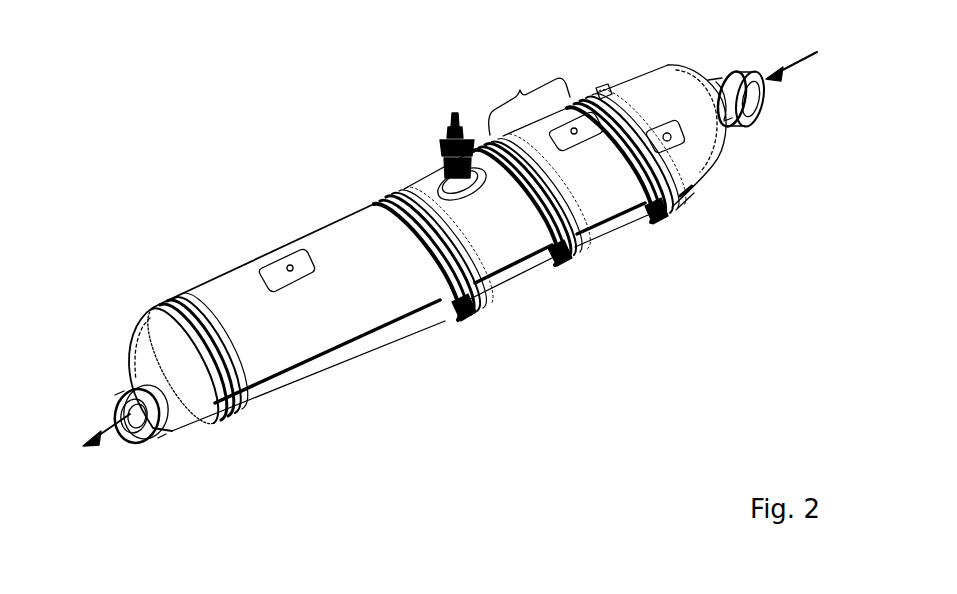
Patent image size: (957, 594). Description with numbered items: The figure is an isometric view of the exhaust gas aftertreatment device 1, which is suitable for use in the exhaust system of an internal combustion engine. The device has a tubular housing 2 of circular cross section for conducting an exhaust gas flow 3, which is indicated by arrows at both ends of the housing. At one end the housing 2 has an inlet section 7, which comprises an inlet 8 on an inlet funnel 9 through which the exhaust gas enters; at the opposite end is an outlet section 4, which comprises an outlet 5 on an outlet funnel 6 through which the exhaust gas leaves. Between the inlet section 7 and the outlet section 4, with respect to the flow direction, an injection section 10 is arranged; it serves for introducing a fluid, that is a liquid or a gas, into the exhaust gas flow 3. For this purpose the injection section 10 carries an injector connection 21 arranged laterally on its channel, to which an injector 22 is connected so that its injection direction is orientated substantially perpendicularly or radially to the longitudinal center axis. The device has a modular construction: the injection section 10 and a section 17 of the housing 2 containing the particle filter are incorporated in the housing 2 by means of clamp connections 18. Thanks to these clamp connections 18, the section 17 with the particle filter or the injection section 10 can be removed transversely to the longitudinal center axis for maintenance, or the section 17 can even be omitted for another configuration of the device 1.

The exhaust gas aftertreatment device 1 is at (256, 122).
The tubular housing 2 is at (214, 271).
The exhaust gas flow 3 is at (107, 437).
The outlet section 4 is at (440, 337).
The outlet 5 is at (118, 412).
The outlet funnel 6 is at (140, 355).
The inlet section 7 is at (725, 200).
The inlet 8 is at (744, 72).
The inlet funnel 9 is at (707, 73).
The injection section 10 is at (460, 323).
The section of the housing containing the particle filter 17 is at (520, 90).
The clamp connections 18 is at (397, 192).
The injector connection 21 is at (430, 174).
The injector 22 is at (442, 143).